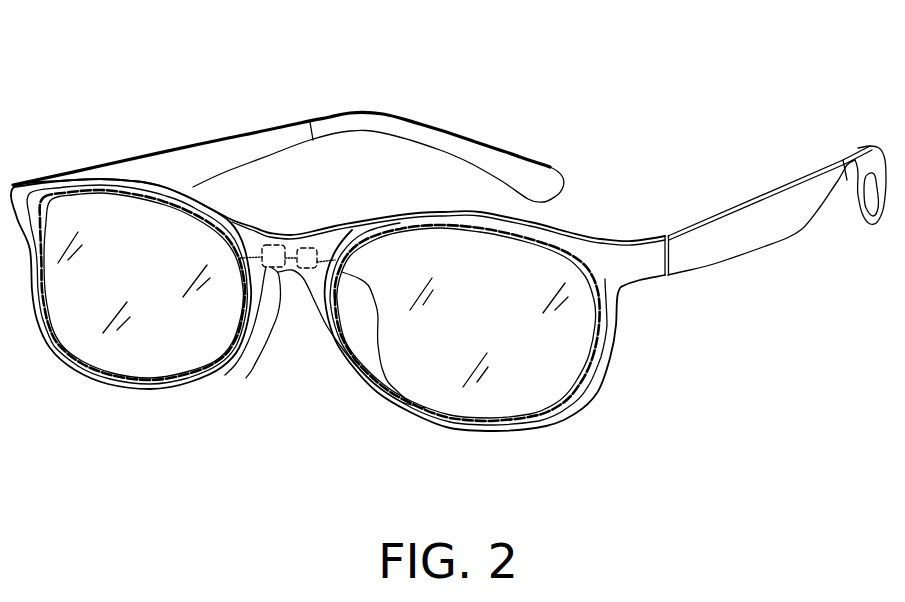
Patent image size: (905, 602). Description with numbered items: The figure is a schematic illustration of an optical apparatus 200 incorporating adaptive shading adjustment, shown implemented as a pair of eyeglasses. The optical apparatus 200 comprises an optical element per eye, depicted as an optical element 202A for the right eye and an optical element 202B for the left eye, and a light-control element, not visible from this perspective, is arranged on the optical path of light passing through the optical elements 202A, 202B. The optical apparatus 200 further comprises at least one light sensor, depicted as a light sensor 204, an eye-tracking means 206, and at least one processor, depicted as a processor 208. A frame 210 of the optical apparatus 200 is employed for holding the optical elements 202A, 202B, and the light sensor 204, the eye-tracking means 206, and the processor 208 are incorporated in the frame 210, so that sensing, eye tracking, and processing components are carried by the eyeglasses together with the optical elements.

The optical apparatus 200 is at (448, 261).
The optical element 202A is at (143, 338).
The optical element 202B is at (466, 371).
The light sensor 204 is at (249, 366).
The eye-tracking means 206 is at (548, 323).
The processor 208 is at (351, 366).
The frame 210 is at (338, 245).